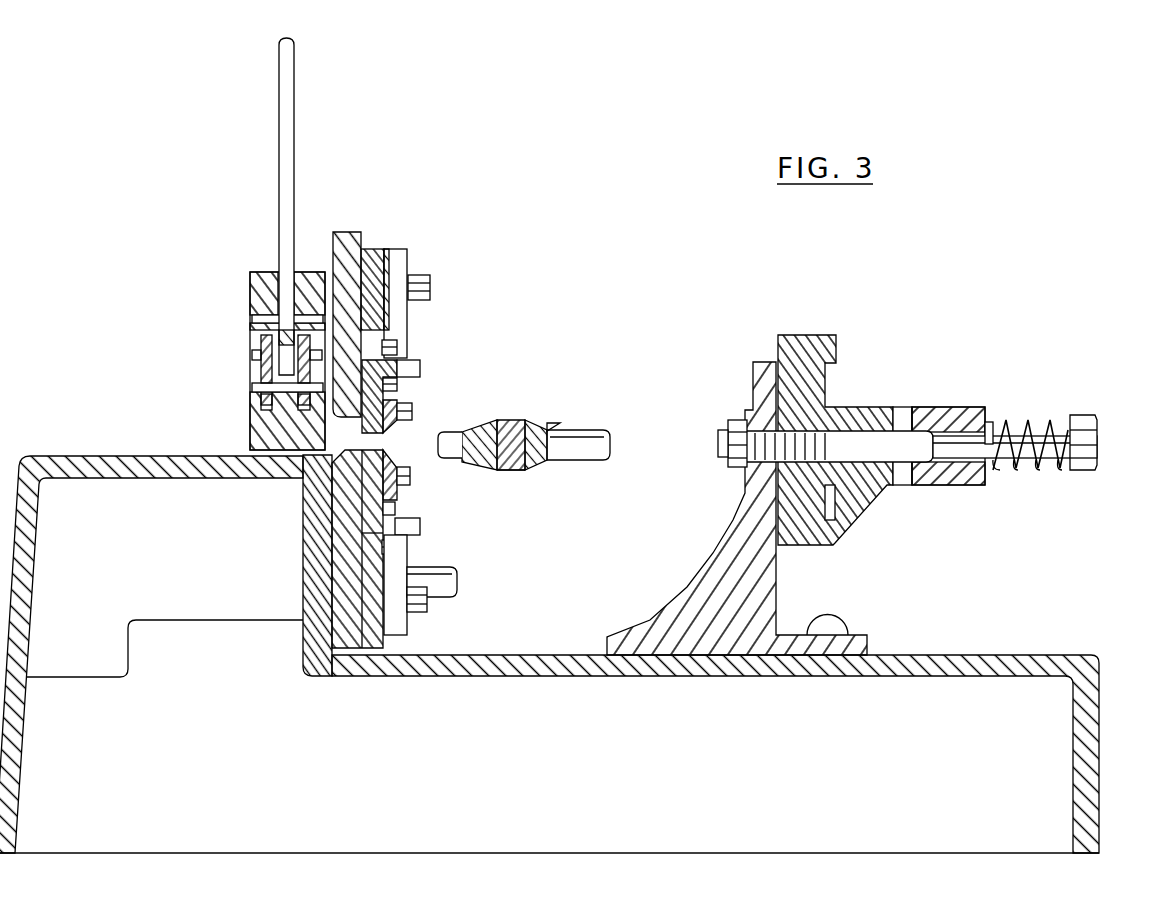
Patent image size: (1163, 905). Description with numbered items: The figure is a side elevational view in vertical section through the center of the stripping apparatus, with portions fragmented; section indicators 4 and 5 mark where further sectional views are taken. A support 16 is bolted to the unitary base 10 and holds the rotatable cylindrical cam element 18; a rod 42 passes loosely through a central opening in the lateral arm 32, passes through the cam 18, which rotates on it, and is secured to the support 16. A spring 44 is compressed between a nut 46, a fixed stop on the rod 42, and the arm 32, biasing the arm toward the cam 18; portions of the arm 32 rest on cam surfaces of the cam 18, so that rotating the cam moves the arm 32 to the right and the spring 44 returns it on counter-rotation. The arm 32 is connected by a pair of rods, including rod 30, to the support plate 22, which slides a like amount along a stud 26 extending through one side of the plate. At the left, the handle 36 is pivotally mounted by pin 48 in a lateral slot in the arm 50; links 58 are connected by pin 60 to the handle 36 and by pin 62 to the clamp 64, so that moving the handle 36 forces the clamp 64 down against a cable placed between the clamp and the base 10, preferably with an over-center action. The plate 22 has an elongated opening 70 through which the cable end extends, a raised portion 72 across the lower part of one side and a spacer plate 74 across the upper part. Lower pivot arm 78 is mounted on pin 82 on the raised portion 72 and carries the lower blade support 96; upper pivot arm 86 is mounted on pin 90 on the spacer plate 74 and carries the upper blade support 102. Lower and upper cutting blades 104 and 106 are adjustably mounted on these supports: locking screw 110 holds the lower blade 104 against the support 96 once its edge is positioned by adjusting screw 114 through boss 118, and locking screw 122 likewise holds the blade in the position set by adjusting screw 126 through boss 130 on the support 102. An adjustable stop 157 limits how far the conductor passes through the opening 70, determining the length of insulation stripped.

The section line 4- 4 is at (330, 70).
The section line 5- 5 is at (470, 222).
The base 10 is at (963, 655).
The support 16 is at (766, 596).
The cam element 18 is at (818, 337).
The support plate 22 is at (341, 238).
The stud 26 is at (446, 581).
The rod 30 is at (583, 438).
The lateral arm 32 is at (955, 408).
The handle 36 is at (281, 146).
The rod 42 is at (1012, 460).
The spring 44 is at (1038, 432).
The nut 46 is at (1082, 470).
The pin 48 is at (256, 320).
The arm 50 is at (258, 284).
The links 58 is at (300, 358).
The pin 60 is at (256, 353).
The pin 62 is at (256, 387).
The clamp 64 is at (266, 439).
The elongated opening 70 is at (325, 468).
The raised portion 72 is at (350, 641).
The spacer plate 74 is at (375, 256).
The lower pivot arm 78 is at (398, 566).
The pin 82 is at (426, 601).
The upper pivot arm 86 is at (401, 321).
The pin 90 is at (431, 285).
The lower blade support 96 is at (394, 508).
The upper blade support 102 is at (398, 384).
The lower cutting blade 104 is at (393, 428).
The upper cutting blade 106 is at (411, 476).
The locking screw 110 is at (396, 488).
The adjusting screw 114 is at (386, 548).
The boss 118 is at (420, 527).
The locking screw 122 is at (413, 411).
The adjusting screw 126 is at (393, 346).
The boss 130 is at (420, 368).
The adjustable stop 157 is at (515, 472).